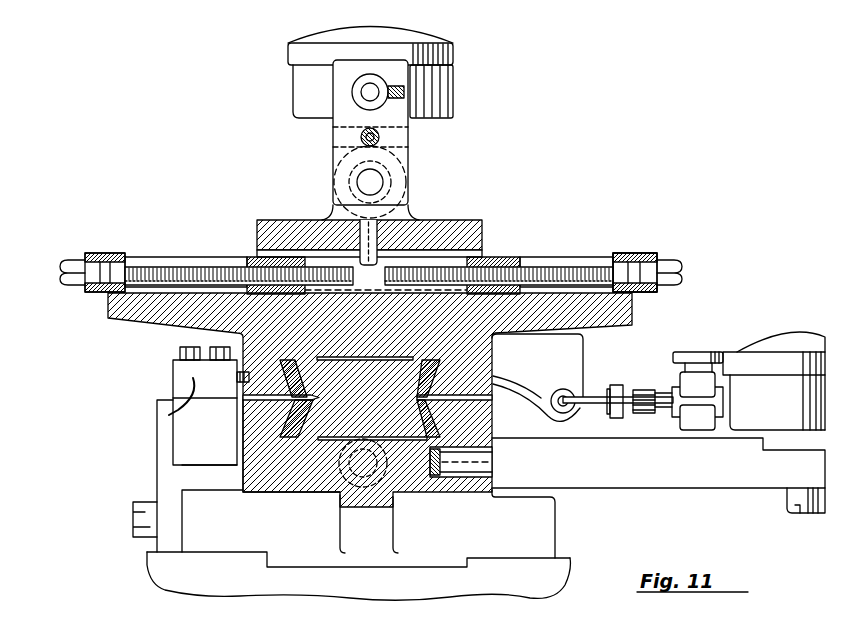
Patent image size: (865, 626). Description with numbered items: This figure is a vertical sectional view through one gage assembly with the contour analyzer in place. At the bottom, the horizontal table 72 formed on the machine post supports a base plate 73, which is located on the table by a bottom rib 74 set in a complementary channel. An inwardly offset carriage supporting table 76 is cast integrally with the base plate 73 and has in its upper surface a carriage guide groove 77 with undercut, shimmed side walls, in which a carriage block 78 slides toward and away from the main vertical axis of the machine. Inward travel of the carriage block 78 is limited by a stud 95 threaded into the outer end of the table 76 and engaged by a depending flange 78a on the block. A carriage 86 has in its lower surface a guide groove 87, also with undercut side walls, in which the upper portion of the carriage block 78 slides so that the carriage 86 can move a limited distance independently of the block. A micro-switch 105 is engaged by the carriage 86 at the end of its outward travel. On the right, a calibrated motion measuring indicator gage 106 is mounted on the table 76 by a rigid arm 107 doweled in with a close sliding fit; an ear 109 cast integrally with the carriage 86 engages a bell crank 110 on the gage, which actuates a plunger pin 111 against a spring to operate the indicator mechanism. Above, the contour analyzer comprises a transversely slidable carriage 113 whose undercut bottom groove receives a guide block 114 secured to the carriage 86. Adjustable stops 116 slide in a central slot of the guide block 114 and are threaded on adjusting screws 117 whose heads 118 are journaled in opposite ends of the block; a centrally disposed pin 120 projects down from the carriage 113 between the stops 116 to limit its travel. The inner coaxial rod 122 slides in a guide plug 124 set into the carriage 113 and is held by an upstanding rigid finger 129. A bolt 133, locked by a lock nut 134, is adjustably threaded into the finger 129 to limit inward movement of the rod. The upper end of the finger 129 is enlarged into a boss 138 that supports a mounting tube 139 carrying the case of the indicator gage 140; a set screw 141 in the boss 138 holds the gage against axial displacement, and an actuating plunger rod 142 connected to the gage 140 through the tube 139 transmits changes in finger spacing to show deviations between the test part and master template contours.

The calibrated motion measuring indicator gage 140 is at (450, 58).
The boss 138 is at (340, 74).
The set screw 141 is at (400, 90).
The actuating plunger rod 142 is at (378, 98).
The mounting tube 139 is at (355, 102).
The lock nut 134 is at (380, 137).
The bolt 133 is at (360, 138).
The upstanding rigid finger 129 is at (408, 152).
The inner coaxial rod 122 is at (376, 182).
The guide plug 124 is at (384, 192).
The centrally disposed pin 120 is at (362, 236).
The transversely slidable carriage 113 is at (483, 224).
The head 118 is at (70, 258).
The adjusting screw 117 is at (148, 263).
The adjustable stop 116 is at (250, 255).
The guide block 114 is at (630, 262).
The carriage 86 is at (633, 318).
The ear 109 is at (568, 352).
The calibrated motion measuring indicator gage 106 is at (790, 335).
The plunger pin 111 is at (667, 392).
The bell crank 110 is at (599, 405).
The rigid arm 107 is at (700, 478).
The carriage block 78 is at (351, 366).
The guide groove 87 is at (434, 361).
The micro-switch 105 is at (172, 384).
The carriage guide groove 77 is at (317, 426).
The carriage supporting table 76 is at (248, 444).
The stud 95 is at (323, 494).
The depending flange 78a is at (417, 498).
The base plate 73 is at (556, 522).
The bottom rib 74 is at (303, 557).
The table 72 is at (570, 575).